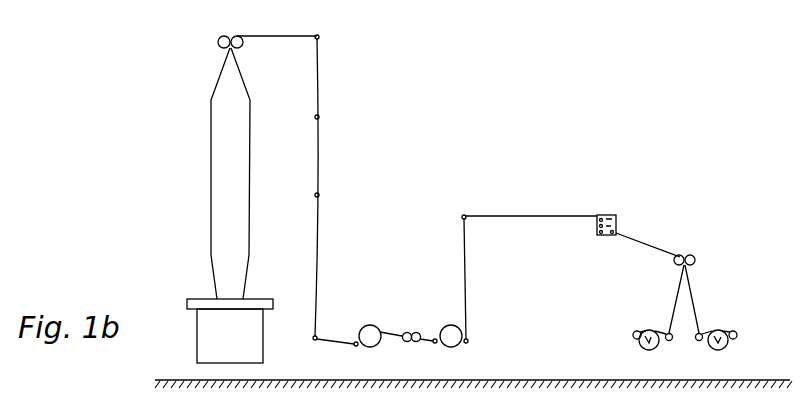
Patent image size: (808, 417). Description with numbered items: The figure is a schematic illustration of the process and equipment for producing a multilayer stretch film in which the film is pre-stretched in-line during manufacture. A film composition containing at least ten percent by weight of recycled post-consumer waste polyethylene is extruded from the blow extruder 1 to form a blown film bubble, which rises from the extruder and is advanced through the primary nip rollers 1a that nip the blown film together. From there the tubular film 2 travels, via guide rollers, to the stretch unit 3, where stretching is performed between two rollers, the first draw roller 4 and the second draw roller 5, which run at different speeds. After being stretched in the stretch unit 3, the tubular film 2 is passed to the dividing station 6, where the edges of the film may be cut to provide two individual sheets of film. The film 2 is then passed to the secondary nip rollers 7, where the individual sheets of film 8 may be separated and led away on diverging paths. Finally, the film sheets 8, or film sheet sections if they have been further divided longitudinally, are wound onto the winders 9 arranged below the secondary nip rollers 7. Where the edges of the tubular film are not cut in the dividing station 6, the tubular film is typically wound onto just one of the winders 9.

The blow extruder 1 is at (196, 336).
The primary nip rollers 1a is at (219, 37).
The tubular film 2 is at (318, 96).
The stretch unit 3 is at (438, 280).
The first draw roller 4 is at (370, 346).
The second draw roller 5 is at (452, 343).
The dividing station 6 is at (597, 232).
The secondary nip rollers 7 is at (697, 259).
The film sheets 8 is at (681, 297).
The winders 9 is at (645, 348).